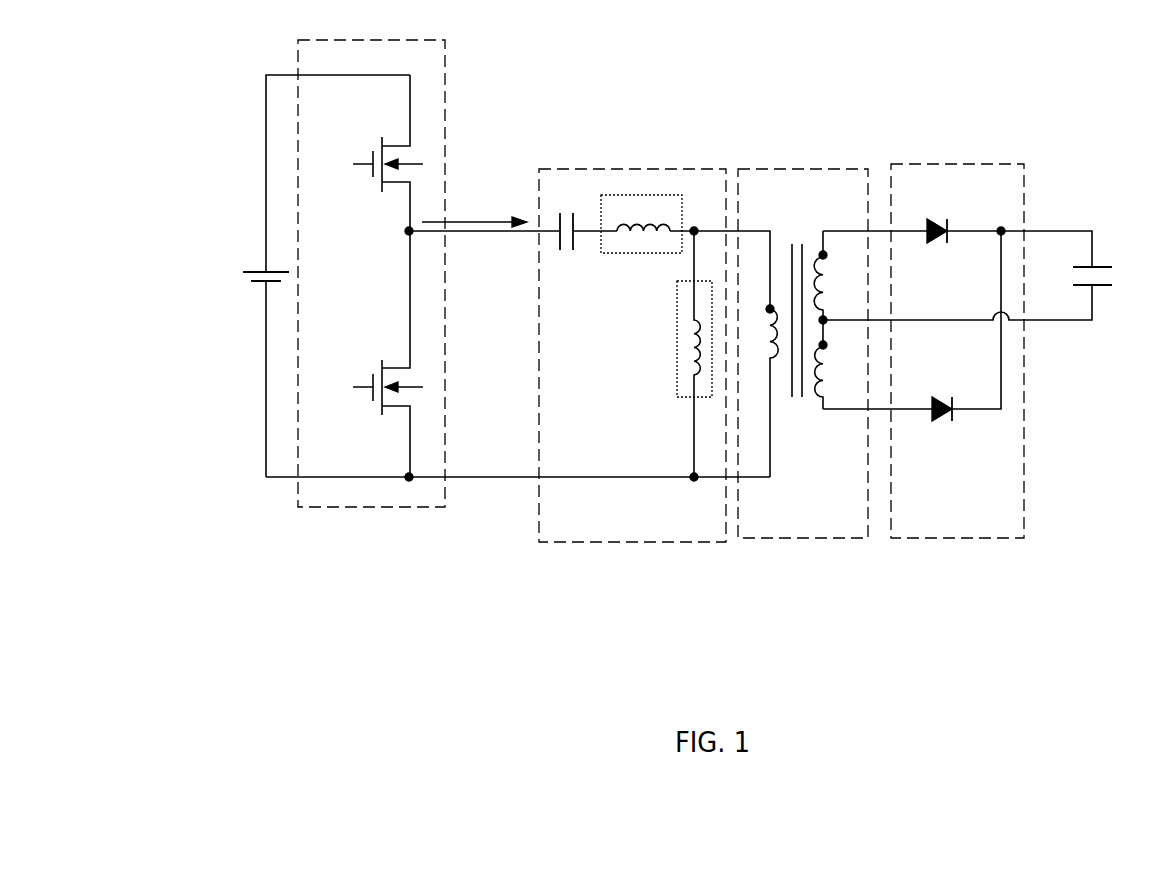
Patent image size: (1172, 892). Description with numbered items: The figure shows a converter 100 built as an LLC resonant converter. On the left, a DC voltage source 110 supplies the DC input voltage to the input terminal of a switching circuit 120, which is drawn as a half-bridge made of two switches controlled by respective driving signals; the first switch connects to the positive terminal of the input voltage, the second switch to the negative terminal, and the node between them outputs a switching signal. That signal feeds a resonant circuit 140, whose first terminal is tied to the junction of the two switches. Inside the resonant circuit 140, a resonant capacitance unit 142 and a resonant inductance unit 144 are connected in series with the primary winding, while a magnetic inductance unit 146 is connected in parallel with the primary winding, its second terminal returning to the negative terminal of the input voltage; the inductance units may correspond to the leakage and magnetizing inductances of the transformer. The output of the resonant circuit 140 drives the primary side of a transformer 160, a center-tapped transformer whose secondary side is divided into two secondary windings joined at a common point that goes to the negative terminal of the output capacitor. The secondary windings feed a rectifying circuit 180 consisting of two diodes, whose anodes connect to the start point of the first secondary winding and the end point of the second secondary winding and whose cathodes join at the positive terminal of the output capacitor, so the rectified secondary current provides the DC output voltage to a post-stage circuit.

The converter 100 is at (188, 65).
The DC voltage source 110 is at (259, 270).
The switching circuit 120 is at (320, 510).
The resonant circuit 140 is at (690, 168).
The resonant capacitance unit 142 is at (557, 250).
The resonant inductance unit 144 is at (624, 255).
The magnetic inductance unit 146 is at (675, 373).
The transformer 160 is at (778, 168).
The rectifying circuit 180 is at (943, 540).